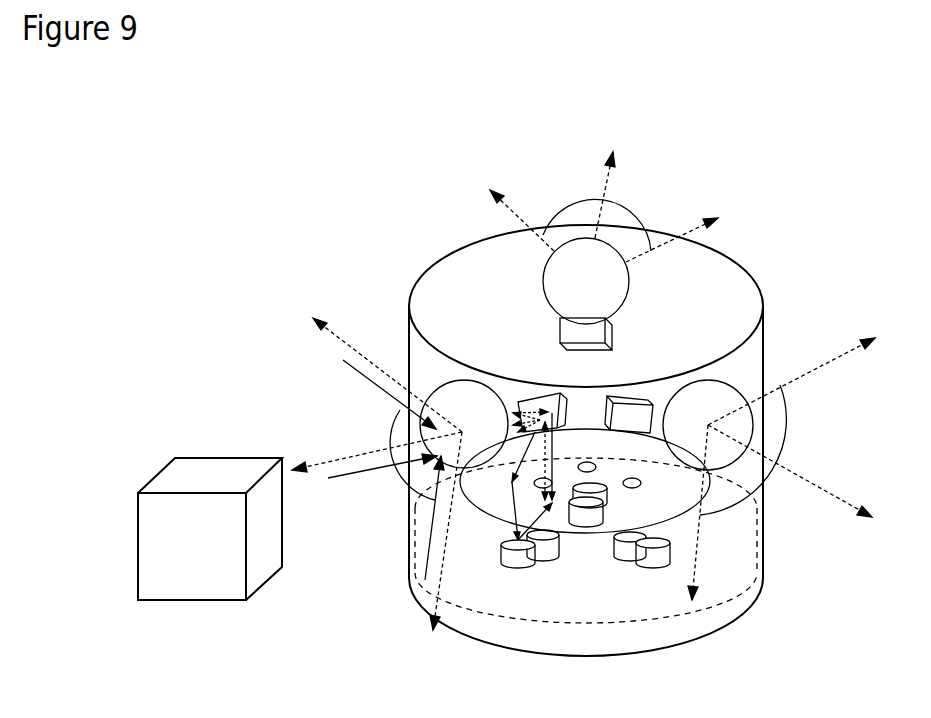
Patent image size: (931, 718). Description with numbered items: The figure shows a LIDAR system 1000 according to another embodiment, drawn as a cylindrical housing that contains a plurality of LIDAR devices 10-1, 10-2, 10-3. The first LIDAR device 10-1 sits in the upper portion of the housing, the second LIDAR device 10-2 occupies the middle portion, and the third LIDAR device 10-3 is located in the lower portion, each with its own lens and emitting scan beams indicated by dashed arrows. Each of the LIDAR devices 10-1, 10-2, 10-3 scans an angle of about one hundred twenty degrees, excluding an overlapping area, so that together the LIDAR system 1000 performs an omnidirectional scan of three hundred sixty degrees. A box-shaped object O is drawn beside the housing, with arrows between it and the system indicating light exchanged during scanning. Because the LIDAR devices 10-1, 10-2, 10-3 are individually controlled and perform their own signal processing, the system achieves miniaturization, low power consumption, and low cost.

The LIDAR system 1000 is at (203, 128).
The LIDAR device 10-1 is at (678, 281).
The LIDAR device 10-2 is at (716, 529).
The LIDAR device 10-3 is at (478, 578).
The object O is at (168, 474).